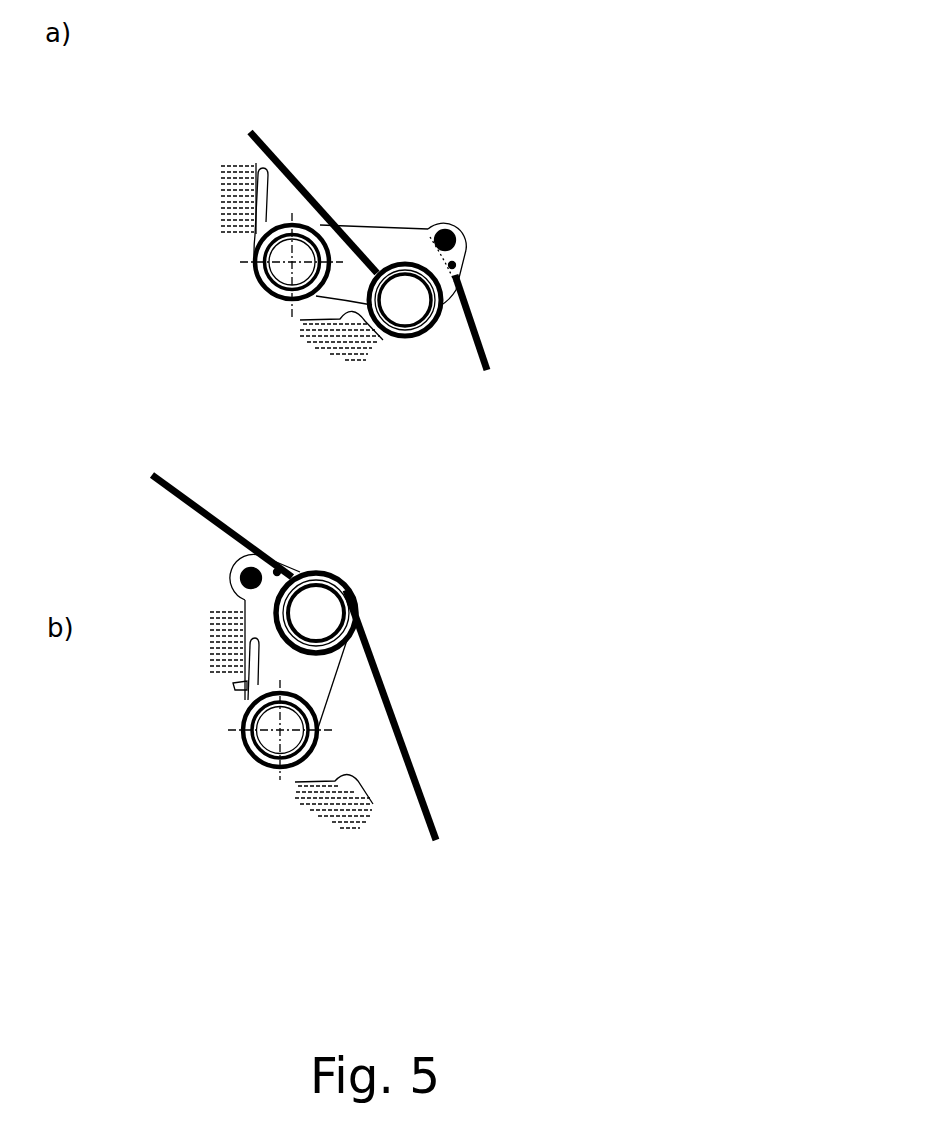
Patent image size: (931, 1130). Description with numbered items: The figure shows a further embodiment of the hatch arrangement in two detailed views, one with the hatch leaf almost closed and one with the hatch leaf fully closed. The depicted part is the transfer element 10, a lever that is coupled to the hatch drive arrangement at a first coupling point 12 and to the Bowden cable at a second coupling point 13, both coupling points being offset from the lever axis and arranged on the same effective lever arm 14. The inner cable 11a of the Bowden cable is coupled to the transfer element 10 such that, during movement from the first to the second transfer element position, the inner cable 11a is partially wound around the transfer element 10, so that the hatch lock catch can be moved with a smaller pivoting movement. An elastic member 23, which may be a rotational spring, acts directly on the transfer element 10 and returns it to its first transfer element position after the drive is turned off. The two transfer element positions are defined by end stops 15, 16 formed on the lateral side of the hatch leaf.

The transfer element 10 is at (462, 260).
The inner cable 11a is at (482, 345).
The first coupling point 12 is at (445, 307).
The second coupling point 13 is at (465, 237).
The effective lever arm 14 is at (348, 283).
The end stop 15 is at (365, 317).
The end stop 16 is at (253, 202).
The elastic member 23 is at (317, 303).